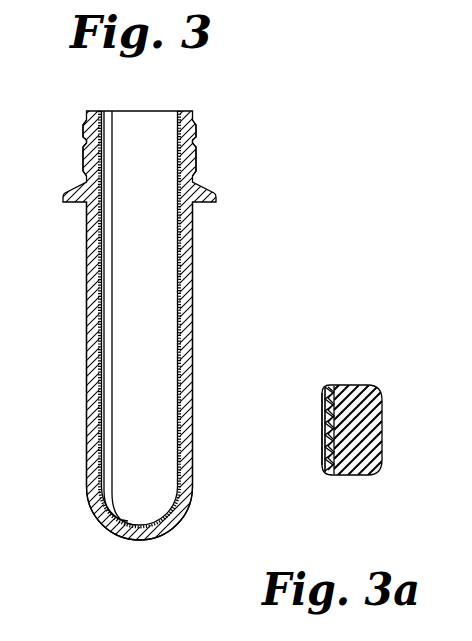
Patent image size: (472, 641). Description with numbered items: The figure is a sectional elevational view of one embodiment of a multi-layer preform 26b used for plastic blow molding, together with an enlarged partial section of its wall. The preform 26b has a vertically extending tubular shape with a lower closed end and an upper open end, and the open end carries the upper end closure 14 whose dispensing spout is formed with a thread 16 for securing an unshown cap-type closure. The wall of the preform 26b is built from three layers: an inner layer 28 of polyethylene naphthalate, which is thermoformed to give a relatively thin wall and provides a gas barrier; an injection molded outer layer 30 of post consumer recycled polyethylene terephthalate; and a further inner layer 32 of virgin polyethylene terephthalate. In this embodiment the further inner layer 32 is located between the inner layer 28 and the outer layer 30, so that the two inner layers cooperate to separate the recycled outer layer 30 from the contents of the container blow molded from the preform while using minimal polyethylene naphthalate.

In FIG. 3, the upper end closure 14 is at (196, 127).
In FIG. 3, the thread 16 is at (84, 132).
In FIG. 3, the multi-layer preform 26b is at (210, 331).
In FIG. 3, the inner layer of polyethylene naphthalate 28 is at (188, 237).
In FIG. 3A, the inner layer of polyethylene naphthalate 28 is at (321, 446).
In FIG. 3, the injection molded outer layer of post consumer recycled polyethylene terephthalat 30 is at (188, 359).
In FIG. 3A, the injection molded outer layer of post consumer recycled polyethylene terephthalat 30 is at (369, 474).
In FIG. 3, the further inner layer of virgin polyethylene terephthalate 32 is at (188, 277).
In FIG. 3A, the further inner layer of virgin polyethylene terephthalate 32 is at (329, 471).